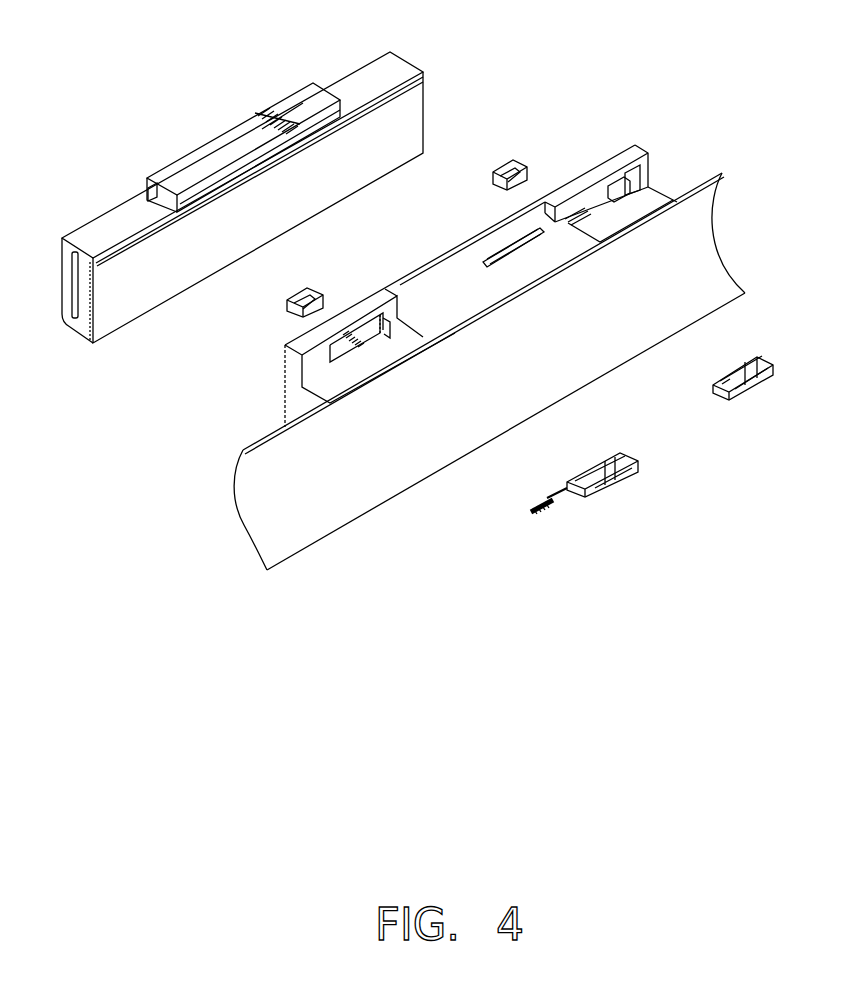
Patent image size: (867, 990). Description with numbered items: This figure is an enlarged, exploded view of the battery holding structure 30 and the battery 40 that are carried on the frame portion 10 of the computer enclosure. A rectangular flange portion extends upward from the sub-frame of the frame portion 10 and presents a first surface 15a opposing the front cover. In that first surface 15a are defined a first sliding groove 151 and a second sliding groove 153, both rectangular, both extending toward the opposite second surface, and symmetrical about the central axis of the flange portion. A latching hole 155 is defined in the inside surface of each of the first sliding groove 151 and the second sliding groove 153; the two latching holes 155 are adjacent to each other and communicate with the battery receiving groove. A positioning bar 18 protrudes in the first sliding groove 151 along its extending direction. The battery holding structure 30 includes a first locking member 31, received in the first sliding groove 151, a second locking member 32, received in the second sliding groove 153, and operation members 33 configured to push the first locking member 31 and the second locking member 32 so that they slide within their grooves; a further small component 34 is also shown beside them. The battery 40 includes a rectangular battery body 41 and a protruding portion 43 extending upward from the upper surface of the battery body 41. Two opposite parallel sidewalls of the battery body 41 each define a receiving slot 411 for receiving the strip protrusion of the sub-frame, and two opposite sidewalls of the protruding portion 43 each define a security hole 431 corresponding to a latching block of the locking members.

The frame portion 10 is at (604, 146).
The first surface 15a is at (644, 158).
The first sliding groove 151 is at (628, 182).
The second sliding groove 153 is at (300, 357).
The latching hole 155 is at (390, 323).
The positioning bar 18 is at (662, 223).
The battery holding structure 30 is at (620, 489).
The first locking member 31 is at (763, 380).
The second locking member 32 is at (623, 452).
The operation member 33 is at (511, 161).
The second clip 34 is at (307, 288).
The battery 40 is at (373, 78).
The battery body 41 is at (405, 119).
The receiving slot 411 is at (75, 280).
The protruding portion 43 is at (203, 162).
The security hole 431 is at (148, 188).